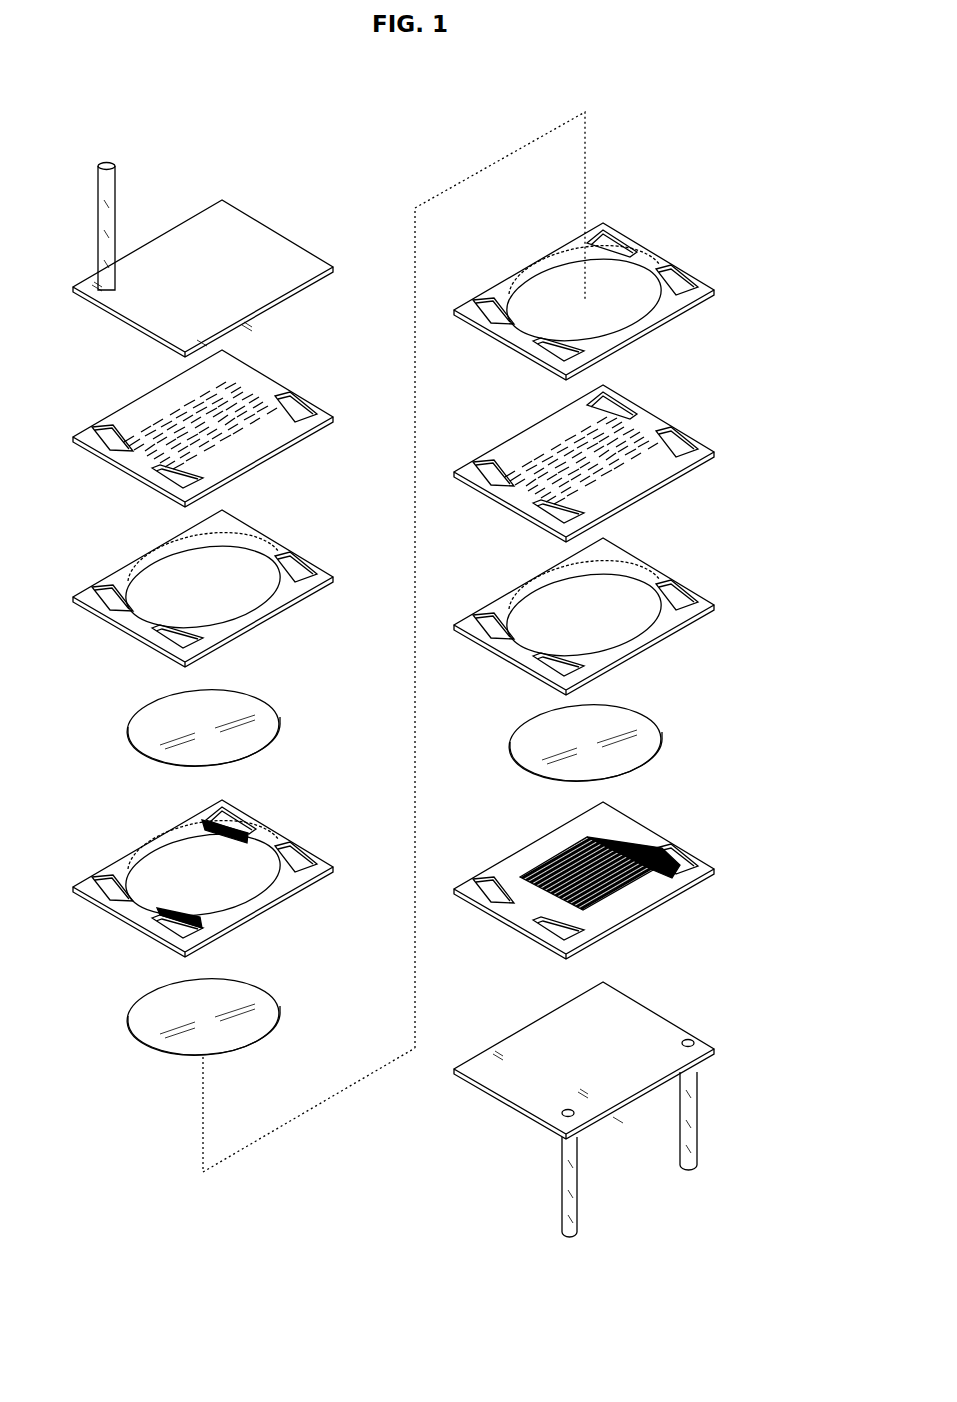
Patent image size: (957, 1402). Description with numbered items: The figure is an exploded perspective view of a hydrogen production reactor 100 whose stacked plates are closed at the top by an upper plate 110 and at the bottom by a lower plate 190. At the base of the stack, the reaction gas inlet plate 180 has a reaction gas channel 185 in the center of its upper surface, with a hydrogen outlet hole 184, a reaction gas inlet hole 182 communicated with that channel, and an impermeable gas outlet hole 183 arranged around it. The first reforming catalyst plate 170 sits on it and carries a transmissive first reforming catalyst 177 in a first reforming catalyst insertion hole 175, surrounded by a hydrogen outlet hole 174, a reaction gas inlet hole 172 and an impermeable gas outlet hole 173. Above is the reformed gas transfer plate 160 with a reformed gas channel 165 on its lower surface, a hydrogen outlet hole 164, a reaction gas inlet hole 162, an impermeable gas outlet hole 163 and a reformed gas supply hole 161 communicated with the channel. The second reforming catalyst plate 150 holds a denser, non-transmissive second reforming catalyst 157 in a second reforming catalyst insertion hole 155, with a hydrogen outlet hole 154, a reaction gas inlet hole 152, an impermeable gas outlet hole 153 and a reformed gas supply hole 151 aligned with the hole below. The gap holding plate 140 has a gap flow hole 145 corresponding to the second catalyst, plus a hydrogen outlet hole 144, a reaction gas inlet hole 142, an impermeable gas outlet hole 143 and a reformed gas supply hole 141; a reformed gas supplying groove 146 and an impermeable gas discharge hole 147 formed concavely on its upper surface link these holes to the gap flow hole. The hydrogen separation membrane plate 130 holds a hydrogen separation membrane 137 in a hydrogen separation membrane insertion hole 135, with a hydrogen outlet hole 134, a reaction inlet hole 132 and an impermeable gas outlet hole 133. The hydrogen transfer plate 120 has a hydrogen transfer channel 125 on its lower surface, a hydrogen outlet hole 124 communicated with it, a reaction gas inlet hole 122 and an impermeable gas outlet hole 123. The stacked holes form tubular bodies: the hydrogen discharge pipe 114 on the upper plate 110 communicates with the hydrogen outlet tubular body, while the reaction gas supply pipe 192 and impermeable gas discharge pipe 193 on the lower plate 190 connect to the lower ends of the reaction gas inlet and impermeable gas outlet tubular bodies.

The hydrogen production reactor 100 is at (405, 111).
The upper plate 110 is at (214, 260).
The hydrogen discharge pipe 114 is at (112, 187).
The hydrogen transfer plate 120 is at (193, 433).
The reaction gas inlet hole 122 is at (307, 418).
The impermeable gas outlet hole 123 is at (180, 482).
The hydrogen outlet hole 124 is at (108, 438).
The hydrogen transfer channel 125 is at (247, 438).
The hydrogen separation membrane plate 130 is at (199, 593).
The reaction inlet hole 132 is at (300, 558).
The impermeable gas outlet hole 133 is at (180, 642).
The hydrogen outlet hole 134 is at (108, 598).
The hydrogen separation membrane insertion hole 135 is at (258, 592).
The hydrogen separation membrane 137 is at (277, 718).
The gap holding plate 140 is at (194, 860).
The reformed gas supply hole 141 is at (223, 823).
The reaction gas inlet hole 142 is at (293, 858).
The impermeable gas outlet hole 143 is at (172, 927).
The hydrogen outlet hole 144 is at (97, 895).
The gap flow hole 145 is at (239, 879).
The reformed gas supplying groove 146 is at (193, 832).
The impermeable gas discharge hole 147 is at (207, 918).
The second reforming catalyst plate 150 is at (608, 295).
The reformed gas supply hole 151 is at (603, 243).
The reaction gas inlet hole 152 is at (685, 290).
The impermeable gas outlet hole 153 is at (558, 355).
The hydrogen outlet hole 154 is at (490, 315).
The second reforming catalyst insertion hole 155 is at (552, 293).
The second reforming catalyst 157 is at (270, 1012).
The reformed gas transfer plate 160 is at (613, 454).
The reformed gas supply hole 161 is at (603, 403).
The reaction gas inlet hole 162 is at (683, 448).
The impermeable gas outlet hole 163 is at (558, 517).
The hydrogen outlet hole 164 is at (487, 470).
The reformed gas channel 165 is at (640, 465).
The first reforming catalyst plate 170 is at (618, 617).
The reaction gas inlet hole 172 is at (680, 597).
The impermeable gas outlet hole 173 is at (560, 670).
The hydrogen outlet hole 174 is at (483, 623).
The first reforming catalyst insertion hole 175 is at (623, 597).
The first reforming catalyst 177 is at (648, 730).
The reaction gas inlet plate 180 is at (618, 885).
The reaction gas inlet hole 182 is at (678, 863).
The impermeable gas outlet hole 183 is at (558, 928).
The hydrogen outlet hole 184 is at (490, 892).
The reaction gas channel 185 is at (540, 865).
The lower plate 190 is at (620, 1109).
The reaction gas supply pipe 192 is at (695, 1123).
The impermeable gas discharge pipe 193 is at (575, 1197).